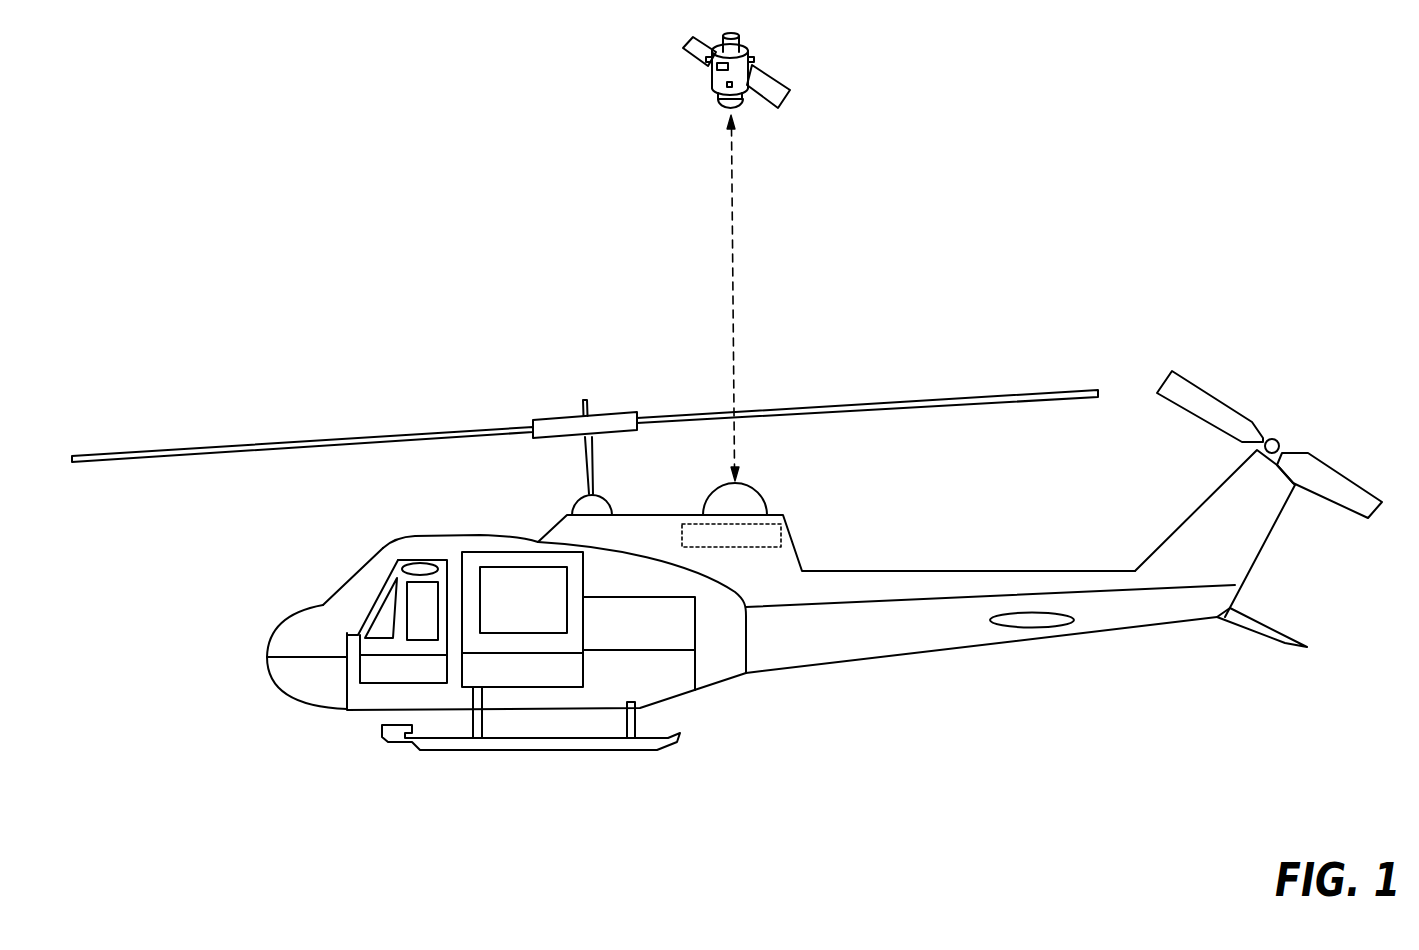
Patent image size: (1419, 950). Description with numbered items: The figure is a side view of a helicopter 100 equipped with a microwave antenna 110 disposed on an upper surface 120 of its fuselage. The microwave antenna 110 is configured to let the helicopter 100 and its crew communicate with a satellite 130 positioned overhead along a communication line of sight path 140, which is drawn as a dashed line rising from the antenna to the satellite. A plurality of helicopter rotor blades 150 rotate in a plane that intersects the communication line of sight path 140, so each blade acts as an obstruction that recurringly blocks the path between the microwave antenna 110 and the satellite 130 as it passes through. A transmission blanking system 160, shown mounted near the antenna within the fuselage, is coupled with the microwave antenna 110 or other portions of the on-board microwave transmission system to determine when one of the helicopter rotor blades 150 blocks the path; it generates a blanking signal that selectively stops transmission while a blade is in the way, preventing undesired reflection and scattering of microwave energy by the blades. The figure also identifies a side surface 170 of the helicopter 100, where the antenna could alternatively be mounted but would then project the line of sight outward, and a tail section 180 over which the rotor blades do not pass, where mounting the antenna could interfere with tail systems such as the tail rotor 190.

The helicopter 100 is at (105, 400).
The microwave antenna 110 is at (750, 490).
The upper surface 120 is at (777, 513).
The satellite 130 is at (770, 80).
The communication line of sight path 140 is at (732, 243).
The helicopter rotor blades 150 is at (1042, 390).
The transmission blanking system 160 is at (695, 523).
The side surface 170 is at (795, 662).
The tail section 180 is at (1195, 530).
The tail rotor 190 is at (1248, 418).